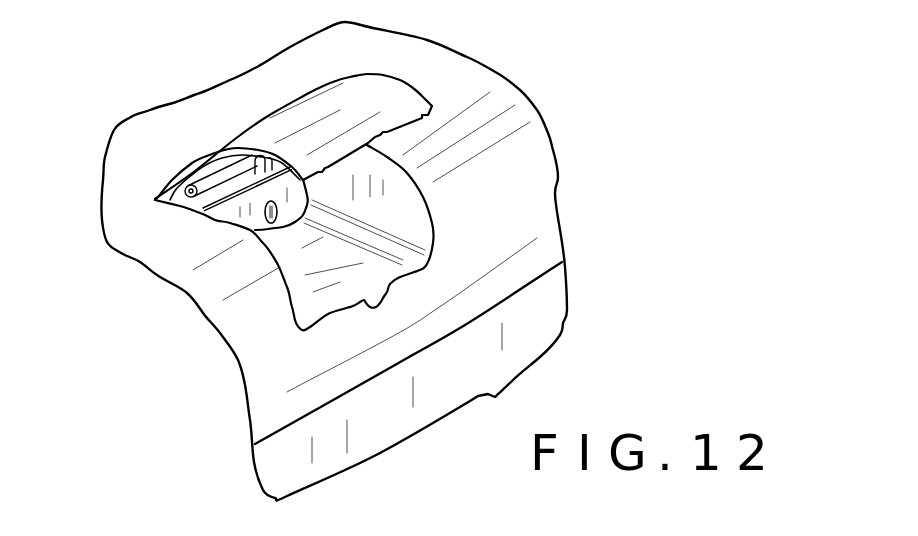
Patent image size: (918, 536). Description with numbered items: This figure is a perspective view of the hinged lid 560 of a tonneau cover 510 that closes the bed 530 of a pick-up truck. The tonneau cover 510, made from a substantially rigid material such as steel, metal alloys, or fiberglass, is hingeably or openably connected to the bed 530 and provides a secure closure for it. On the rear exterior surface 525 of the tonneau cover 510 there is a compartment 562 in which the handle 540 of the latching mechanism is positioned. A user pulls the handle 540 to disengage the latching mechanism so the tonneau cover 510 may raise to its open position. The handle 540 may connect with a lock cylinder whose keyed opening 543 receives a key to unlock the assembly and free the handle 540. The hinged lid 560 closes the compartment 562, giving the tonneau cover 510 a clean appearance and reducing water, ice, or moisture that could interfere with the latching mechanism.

The tonneau cover 510 is at (462, 80).
The rear exterior surface 525 is at (517, 147).
The bed 530 is at (368, 427).
The handle 540 is at (233, 212).
The keyed opening 543 is at (268, 224).
The hinged lid 560 is at (377, 88).
The compartment 562 is at (408, 213).